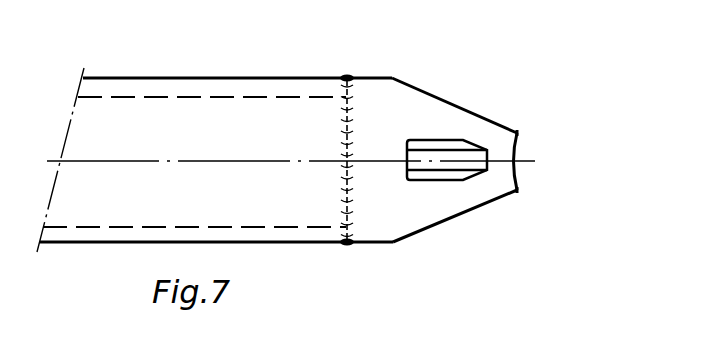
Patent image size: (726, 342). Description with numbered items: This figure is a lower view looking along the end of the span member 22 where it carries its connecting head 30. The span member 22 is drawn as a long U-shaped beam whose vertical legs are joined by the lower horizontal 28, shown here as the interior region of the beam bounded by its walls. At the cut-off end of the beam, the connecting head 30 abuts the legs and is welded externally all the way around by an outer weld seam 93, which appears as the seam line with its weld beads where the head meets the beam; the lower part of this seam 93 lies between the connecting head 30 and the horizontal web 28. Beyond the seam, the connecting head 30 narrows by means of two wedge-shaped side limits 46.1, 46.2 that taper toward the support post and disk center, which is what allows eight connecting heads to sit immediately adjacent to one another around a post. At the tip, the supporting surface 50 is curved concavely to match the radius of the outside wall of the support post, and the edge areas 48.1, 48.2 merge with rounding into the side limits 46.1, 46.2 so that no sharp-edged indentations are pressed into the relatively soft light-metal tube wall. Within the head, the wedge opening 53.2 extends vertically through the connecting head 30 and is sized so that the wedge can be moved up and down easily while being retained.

The span member 22 is at (180, 74).
The lower horizontal 28 is at (202, 195).
The connecting head 30 is at (482, 181).
The side limit 46.1 is at (466, 210).
The side limit 46.2 is at (445, 102).
The edge area 48.1 is at (519, 190).
The edge area 48.2 is at (518, 134).
The supporting surface 50 is at (518, 175).
The wedge opening 53.2 is at (460, 140).
The outer weld seam 93 is at (346, 118).